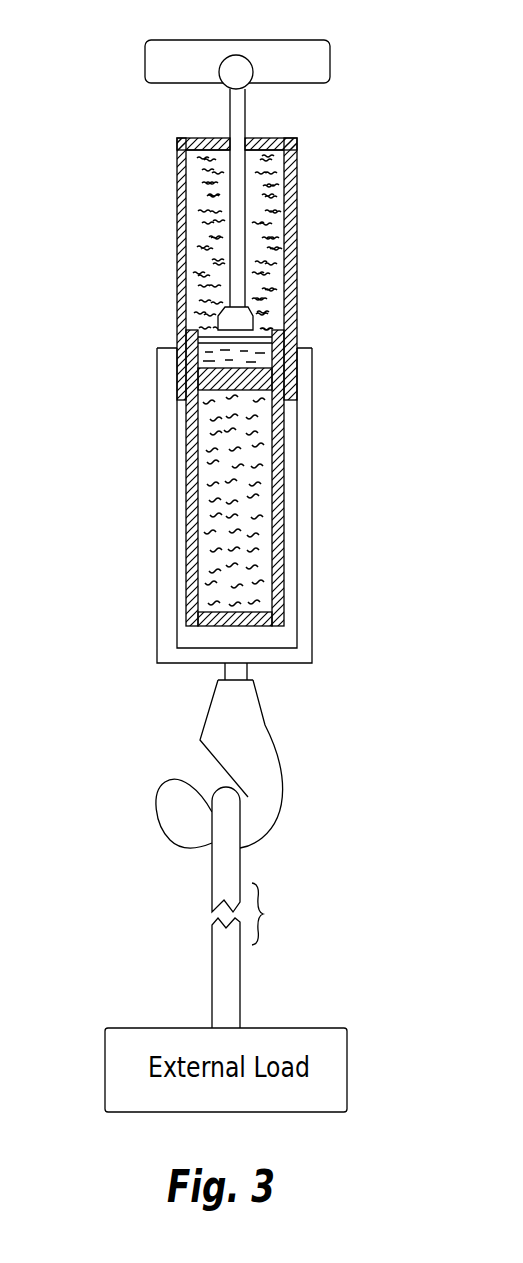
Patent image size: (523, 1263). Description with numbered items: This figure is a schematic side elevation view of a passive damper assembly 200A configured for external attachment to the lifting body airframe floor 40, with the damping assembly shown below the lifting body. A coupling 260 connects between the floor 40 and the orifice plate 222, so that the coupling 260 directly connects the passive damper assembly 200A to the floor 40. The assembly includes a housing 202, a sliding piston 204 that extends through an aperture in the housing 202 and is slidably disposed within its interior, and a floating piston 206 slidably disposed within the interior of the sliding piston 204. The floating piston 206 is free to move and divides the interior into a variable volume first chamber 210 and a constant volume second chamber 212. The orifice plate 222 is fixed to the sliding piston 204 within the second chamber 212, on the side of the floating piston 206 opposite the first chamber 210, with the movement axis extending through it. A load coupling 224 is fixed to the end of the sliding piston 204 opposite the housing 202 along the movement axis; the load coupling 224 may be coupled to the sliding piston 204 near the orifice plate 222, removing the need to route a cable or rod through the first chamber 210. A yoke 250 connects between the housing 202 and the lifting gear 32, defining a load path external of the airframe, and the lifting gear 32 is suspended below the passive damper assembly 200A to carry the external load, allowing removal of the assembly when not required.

The passive damper assembly 200A is at (108, 327).
The floor 40 is at (282, 50).
The coupling 260 is at (230, 120).
The housing 202 is at (297, 158).
The second chamber 212 is at (266, 216).
The load coupling 224 is at (279, 202).
The orifice plate 222 is at (258, 326).
The floating piston 206 is at (194, 406).
The sliding piston 204 is at (278, 458).
The first chamber 210 is at (264, 528).
The yoke 250 is at (306, 578).
The lifting gear 32 is at (270, 910).